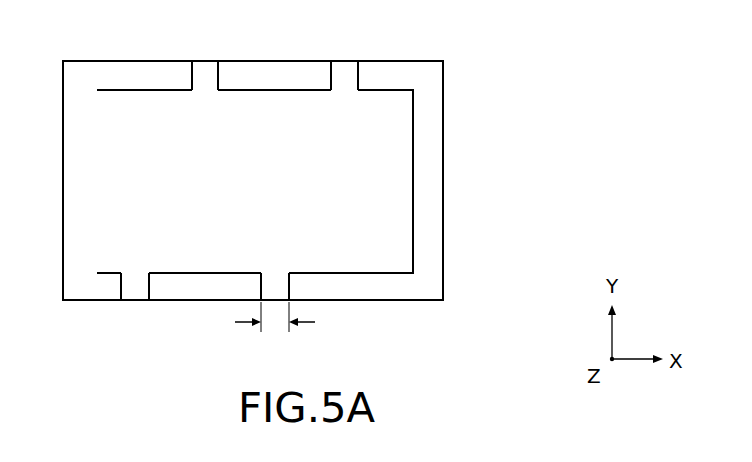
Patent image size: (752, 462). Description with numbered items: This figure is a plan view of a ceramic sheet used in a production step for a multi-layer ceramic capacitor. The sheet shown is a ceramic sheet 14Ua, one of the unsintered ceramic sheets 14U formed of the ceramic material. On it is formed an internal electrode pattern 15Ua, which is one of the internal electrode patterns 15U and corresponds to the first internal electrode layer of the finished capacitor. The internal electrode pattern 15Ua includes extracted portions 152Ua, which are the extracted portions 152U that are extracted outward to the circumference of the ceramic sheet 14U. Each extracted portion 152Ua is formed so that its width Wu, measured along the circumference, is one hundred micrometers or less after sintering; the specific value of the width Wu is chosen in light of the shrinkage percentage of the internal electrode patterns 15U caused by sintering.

The ceramic sheet 14Ua is at (302, 181).
The ceramic sheets 14U is at (302, 181).
The internal electrode pattern 15Ua is at (327, 181).
The internal electrode patterns 15U is at (413, 123).
The extracted portions 152Ua is at (272, 181).
The extracted portions 152U is at (343, 337).
The width Wu is at (275, 332).